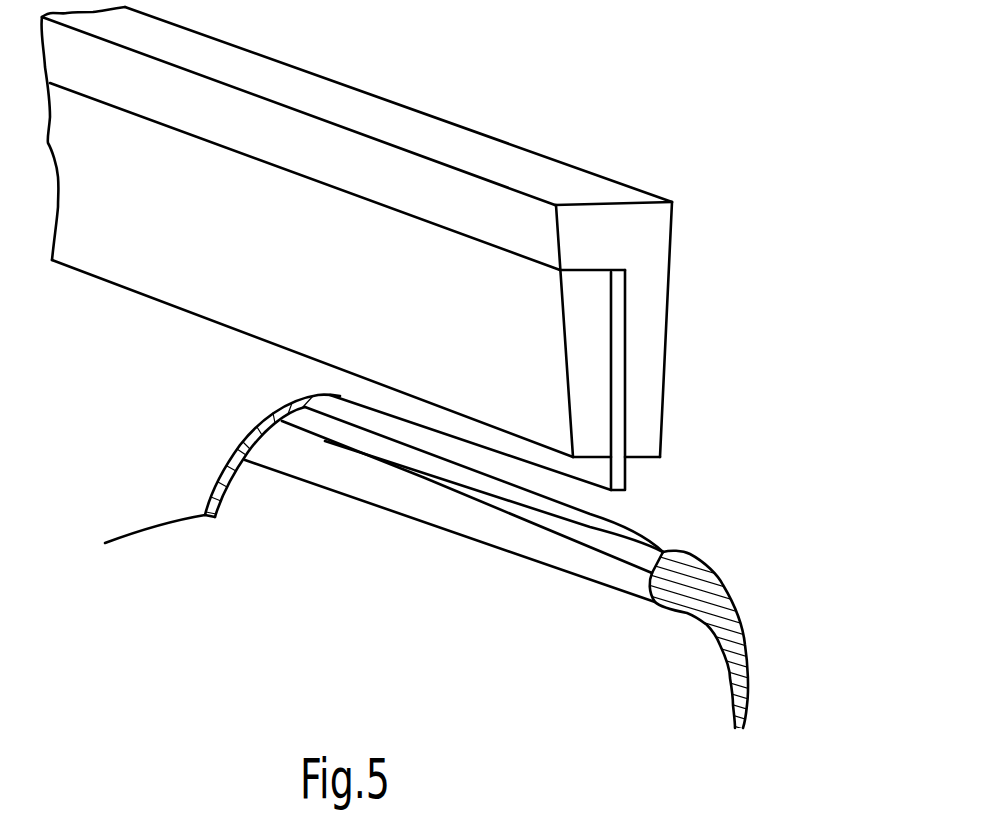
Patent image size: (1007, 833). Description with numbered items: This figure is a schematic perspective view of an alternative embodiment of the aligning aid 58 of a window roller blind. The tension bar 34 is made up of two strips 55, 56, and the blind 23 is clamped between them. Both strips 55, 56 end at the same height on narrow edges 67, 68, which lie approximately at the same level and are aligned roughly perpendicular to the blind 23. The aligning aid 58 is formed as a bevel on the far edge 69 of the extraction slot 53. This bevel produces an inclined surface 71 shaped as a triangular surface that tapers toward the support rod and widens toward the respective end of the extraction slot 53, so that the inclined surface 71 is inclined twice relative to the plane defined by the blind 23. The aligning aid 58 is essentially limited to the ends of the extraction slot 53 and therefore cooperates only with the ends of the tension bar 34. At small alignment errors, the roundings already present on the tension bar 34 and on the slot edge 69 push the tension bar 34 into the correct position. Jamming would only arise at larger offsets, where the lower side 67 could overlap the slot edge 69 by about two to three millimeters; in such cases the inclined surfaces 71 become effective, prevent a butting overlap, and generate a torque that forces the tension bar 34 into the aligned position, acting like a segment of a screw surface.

The tension bar 34 is at (703, 163).
The strip 55 is at (653, 313).
The strip 56 is at (465, 295).
The narrow edge 67 is at (640, 460).
The narrow edge 68 is at (597, 453).
The extraction slot 53 is at (325, 522).
The blind 23 is at (135, 442).
The aligning aid 58 is at (728, 547).
The far edge of the extraction slot 69 is at (461, 532).
The inclined surface 71 is at (636, 553).